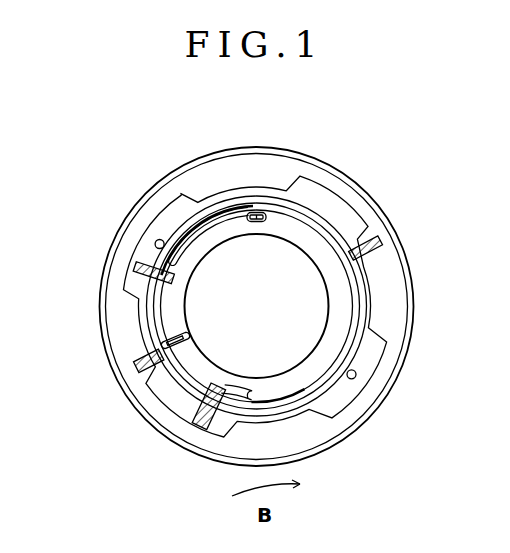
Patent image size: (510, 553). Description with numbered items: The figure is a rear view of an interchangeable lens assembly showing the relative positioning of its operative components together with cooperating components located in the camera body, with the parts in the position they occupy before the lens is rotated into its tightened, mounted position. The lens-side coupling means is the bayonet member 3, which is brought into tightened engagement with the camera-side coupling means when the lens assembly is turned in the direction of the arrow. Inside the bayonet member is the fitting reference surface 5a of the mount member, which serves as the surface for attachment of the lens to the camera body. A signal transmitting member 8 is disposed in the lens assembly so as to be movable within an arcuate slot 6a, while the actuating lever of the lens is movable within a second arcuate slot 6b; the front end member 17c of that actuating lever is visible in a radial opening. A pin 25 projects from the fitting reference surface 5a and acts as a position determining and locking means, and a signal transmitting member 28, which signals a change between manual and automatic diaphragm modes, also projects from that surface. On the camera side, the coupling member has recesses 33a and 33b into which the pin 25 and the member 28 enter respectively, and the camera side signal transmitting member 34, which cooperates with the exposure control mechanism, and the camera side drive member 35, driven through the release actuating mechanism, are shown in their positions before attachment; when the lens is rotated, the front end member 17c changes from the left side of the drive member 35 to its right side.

The bayonet member 3 is at (380, 300).
The fitting reference surface 5a is at (373, 357).
The arcuate slot 6a is at (224, 228).
The arcuate slot 6b is at (246, 395).
The signal transmitting member 8 is at (256, 213).
The front end member 17c is at (184, 346).
The pin 25 is at (156, 241).
The signal transmitting member 28 is at (355, 378).
The recess 33a is at (150, 360).
The recess 33b is at (380, 249).
The camera side signal transmitting member 34 is at (136, 268).
The camera side drive member 35 is at (203, 427).